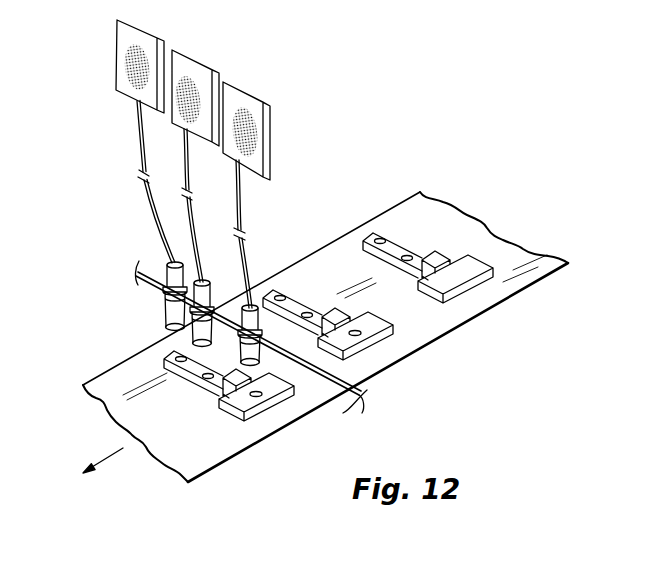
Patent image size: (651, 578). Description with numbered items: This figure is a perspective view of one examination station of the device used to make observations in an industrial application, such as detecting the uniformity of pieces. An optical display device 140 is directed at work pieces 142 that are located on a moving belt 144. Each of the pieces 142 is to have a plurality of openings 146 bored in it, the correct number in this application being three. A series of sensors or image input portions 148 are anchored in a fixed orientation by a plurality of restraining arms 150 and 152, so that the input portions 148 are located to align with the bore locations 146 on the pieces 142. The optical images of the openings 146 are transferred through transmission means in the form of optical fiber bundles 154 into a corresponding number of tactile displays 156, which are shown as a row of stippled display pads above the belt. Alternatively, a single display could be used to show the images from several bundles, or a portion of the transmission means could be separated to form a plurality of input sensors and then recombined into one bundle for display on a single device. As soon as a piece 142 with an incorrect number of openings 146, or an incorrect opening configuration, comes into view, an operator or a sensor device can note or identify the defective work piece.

The optical display device 140 is at (285, 130).
The work pieces 142 is at (447, 300).
The moving belt 144 is at (193, 458).
The openings 146 is at (381, 234).
The image input portions 148 is at (167, 325).
The restraining arm 150 is at (150, 288).
The restraining arm 152 is at (370, 413).
The optical fiber bundles 154 is at (243, 250).
The tactile displays 156 is at (157, 37).